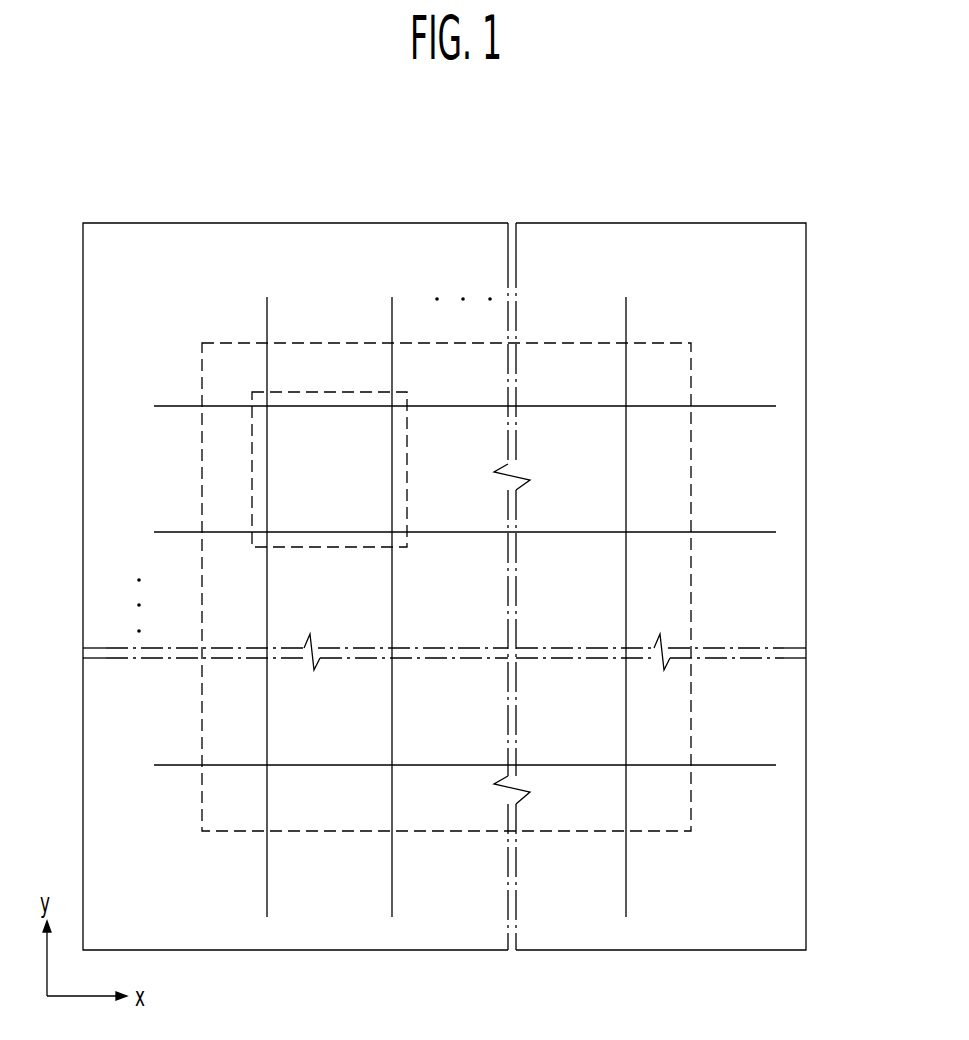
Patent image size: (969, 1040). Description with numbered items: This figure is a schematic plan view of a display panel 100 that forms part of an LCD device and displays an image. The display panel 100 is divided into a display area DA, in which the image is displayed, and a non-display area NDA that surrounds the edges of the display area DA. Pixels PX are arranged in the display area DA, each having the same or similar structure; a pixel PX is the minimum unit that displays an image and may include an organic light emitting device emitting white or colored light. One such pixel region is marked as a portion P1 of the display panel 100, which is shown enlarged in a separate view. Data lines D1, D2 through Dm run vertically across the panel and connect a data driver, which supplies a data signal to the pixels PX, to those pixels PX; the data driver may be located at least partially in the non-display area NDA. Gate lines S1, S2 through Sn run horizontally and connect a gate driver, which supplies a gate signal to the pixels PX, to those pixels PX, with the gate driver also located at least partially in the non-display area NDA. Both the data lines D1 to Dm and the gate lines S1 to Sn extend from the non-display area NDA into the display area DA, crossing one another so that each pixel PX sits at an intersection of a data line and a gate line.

The display panel 100 is at (568, 196).
The data line D1 is at (267, 587).
The data line D2 is at (392, 587).
The data line Dm is at (626, 587).
The gate line S1 is at (452, 406).
The gate line S2 is at (452, 532).
The gate line Sn is at (452, 765).
The portion of the display panel P1 is at (250, 470).
The pixel PX is at (346, 511).
The display area DA is at (670, 808).
The non-display area NDA is at (798, 886).